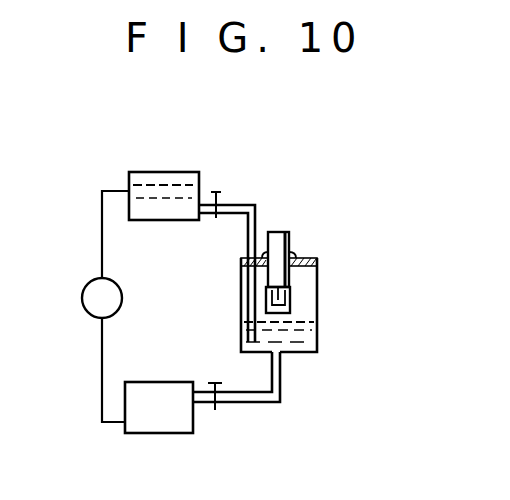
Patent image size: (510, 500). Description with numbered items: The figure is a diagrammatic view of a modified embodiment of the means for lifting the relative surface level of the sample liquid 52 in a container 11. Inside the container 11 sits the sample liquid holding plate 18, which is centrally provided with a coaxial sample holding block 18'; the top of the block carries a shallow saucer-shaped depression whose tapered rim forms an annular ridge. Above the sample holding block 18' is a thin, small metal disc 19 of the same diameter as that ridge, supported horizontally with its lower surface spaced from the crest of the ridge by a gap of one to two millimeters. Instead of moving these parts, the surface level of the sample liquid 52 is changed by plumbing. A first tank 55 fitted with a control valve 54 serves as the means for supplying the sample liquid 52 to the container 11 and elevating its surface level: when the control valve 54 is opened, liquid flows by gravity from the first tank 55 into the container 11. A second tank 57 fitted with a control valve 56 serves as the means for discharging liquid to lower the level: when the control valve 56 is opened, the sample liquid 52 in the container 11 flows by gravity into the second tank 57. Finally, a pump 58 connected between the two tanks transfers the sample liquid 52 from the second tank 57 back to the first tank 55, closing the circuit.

The container 11 is at (328, 300).
The sample liquid holding plate 18 is at (313, 321).
The sample holding block 18' is at (323, 310).
The metal disc 19 is at (288, 293).
The sample liquid 52 is at (303, 345).
The control valve 54 is at (218, 197).
The first tank 55 is at (168, 177).
The control valve 56 is at (216, 408).
The second tank 57 is at (170, 429).
The pump 58 is at (120, 308).